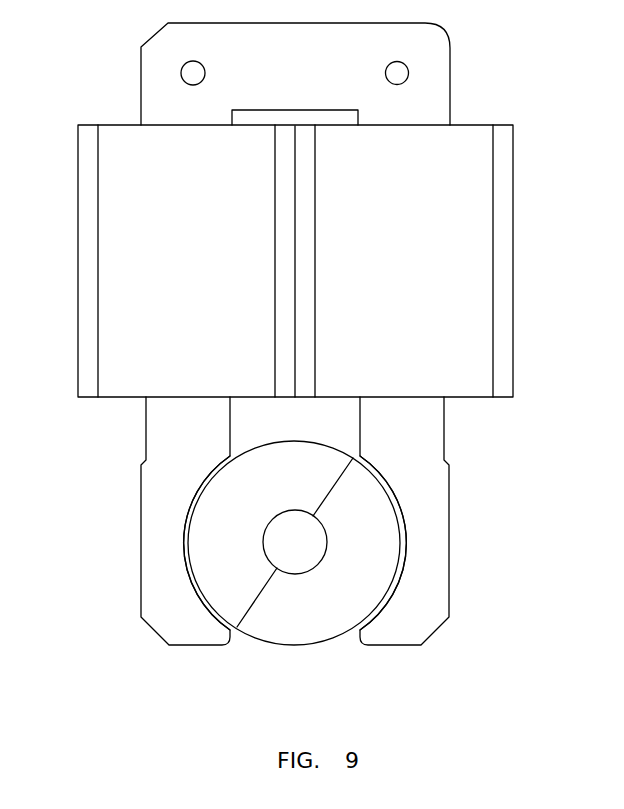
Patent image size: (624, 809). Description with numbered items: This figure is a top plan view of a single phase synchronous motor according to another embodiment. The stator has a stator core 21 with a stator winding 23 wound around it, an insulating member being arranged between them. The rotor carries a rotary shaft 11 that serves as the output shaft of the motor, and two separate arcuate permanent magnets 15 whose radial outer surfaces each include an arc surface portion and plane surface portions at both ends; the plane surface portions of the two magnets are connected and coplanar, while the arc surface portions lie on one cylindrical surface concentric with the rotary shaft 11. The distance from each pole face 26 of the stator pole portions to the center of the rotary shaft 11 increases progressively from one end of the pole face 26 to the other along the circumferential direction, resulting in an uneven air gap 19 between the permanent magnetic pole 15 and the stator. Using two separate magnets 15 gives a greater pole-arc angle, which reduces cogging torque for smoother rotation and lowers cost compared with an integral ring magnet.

The rotary shaft 11 is at (293, 540).
The permanent magnet 15 is at (360, 563).
The air gap 19 is at (203, 600).
The stator core 21 is at (427, 88).
The stator winding 23 is at (483, 219).
The pole face 26 is at (203, 478).